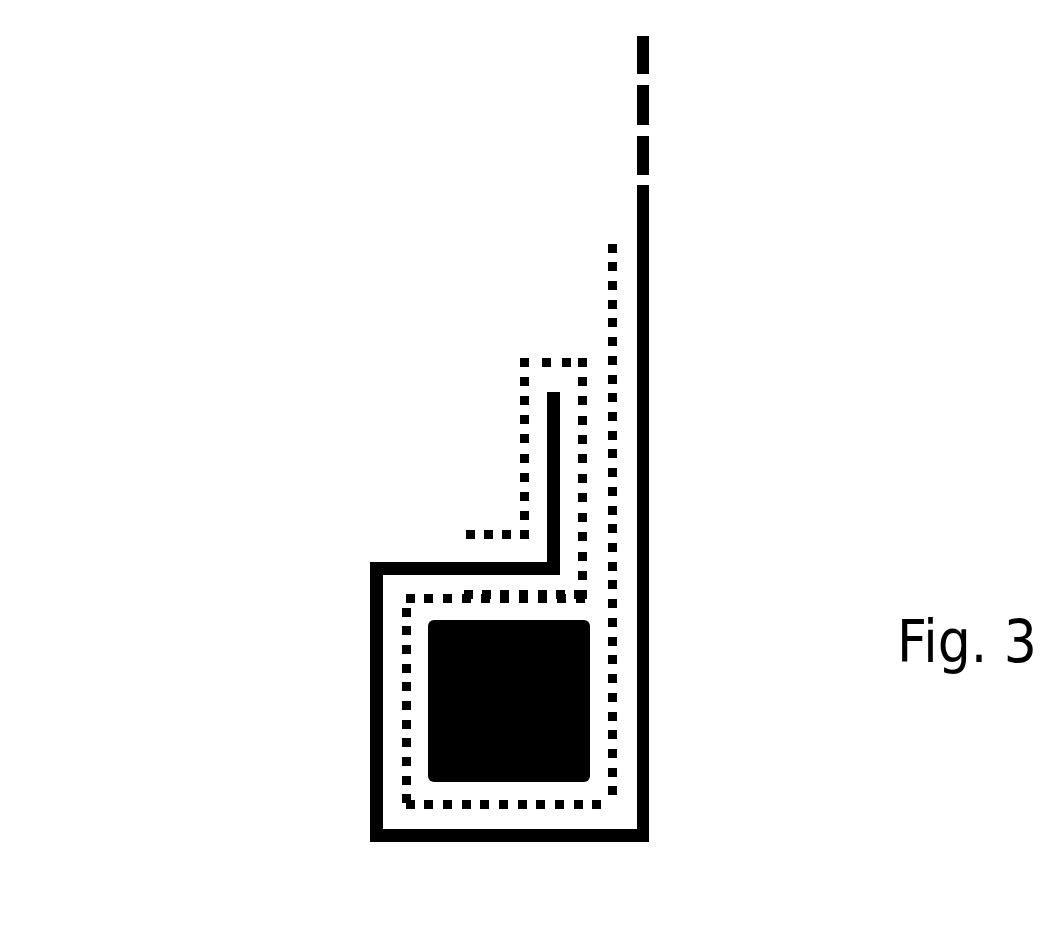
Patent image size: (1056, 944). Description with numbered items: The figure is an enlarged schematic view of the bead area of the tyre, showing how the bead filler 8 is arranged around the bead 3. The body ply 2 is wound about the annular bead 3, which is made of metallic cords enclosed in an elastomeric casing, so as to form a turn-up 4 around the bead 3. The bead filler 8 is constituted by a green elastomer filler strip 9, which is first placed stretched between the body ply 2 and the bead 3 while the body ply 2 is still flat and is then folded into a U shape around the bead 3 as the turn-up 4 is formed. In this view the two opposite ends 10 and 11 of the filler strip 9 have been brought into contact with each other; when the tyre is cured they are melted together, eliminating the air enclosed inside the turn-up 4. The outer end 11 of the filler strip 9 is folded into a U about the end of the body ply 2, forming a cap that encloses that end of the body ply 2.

The body ply 2 is at (649, 243).
The bead 3 is at (510, 702).
The turn-up 4 is at (292, 711).
The bead filler 8 is at (416, 260).
The filler strip 9 is at (610, 317).
The end of the filler strip 10 is at (575, 262).
The outer end of the filler strip 11 is at (487, 477).